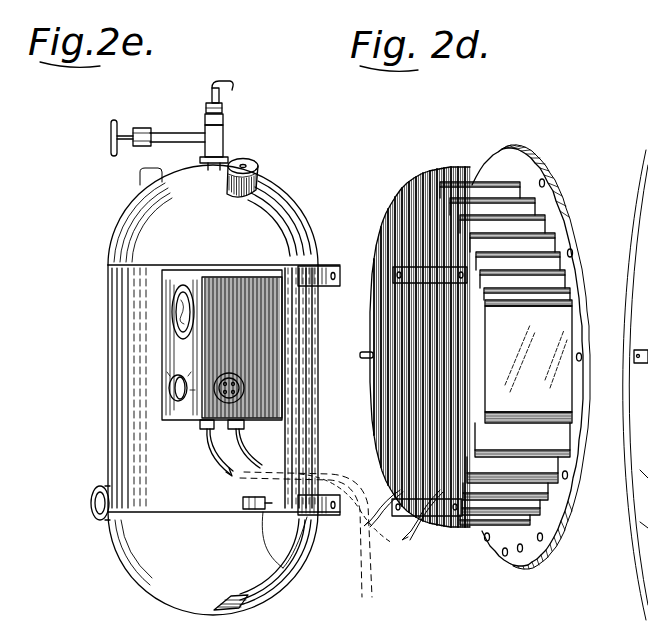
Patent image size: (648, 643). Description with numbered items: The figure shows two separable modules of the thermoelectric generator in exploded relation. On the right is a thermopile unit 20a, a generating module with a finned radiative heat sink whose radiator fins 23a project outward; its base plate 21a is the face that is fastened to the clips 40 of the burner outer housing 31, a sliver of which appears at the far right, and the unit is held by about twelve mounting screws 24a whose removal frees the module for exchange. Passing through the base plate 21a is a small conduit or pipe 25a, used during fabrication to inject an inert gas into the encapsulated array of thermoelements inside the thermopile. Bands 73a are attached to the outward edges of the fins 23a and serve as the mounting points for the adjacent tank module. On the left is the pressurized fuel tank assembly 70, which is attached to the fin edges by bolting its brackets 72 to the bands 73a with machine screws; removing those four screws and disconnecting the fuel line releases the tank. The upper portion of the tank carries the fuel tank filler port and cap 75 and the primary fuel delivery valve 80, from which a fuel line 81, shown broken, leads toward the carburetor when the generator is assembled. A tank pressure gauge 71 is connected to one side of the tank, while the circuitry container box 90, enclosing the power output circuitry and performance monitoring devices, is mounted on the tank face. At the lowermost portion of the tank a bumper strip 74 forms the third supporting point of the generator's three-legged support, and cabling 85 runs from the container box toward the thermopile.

In FIG. 2E, the pressurized fuel tank assembly 70 is at (106, 290).
In FIG. 2E, the tank pressure gauge 71 is at (92, 490).
In FIG. 2E, the brackets 72 is at (328, 266).
In FIG. 2E, the bumper strip 74 is at (240, 610).
In FIG. 2E, the fuel tank filler port and cap 75 is at (260, 170).
In FIG. 2E, the primary fuel delivery valve 80 is at (224, 142).
In FIG. 2E, the fuel line 81 is at (233, 90).
In FIG. 2E, the cable 85 is at (284, 568).
In FIG. 2E, the circuitry container box 90 is at (160, 356).
In FIG. 2D, the thermopile unit 20a is at (466, 327).
In FIG. 2D, the base plate 21a is at (549, 160).
In FIG. 2D, the radiator fins 23a is at (478, 167).
In FIG. 2D, the mounting screws 24a is at (574, 254).
In FIG. 2D, the conduit or pipe 25a is at (360, 355).
In FIG. 2D, the bands 73a is at (393, 275).
In FIG. 2D, the clips 40 is at (646, 484).
In FIG. 2D, the outer housing 31 is at (647, 528).